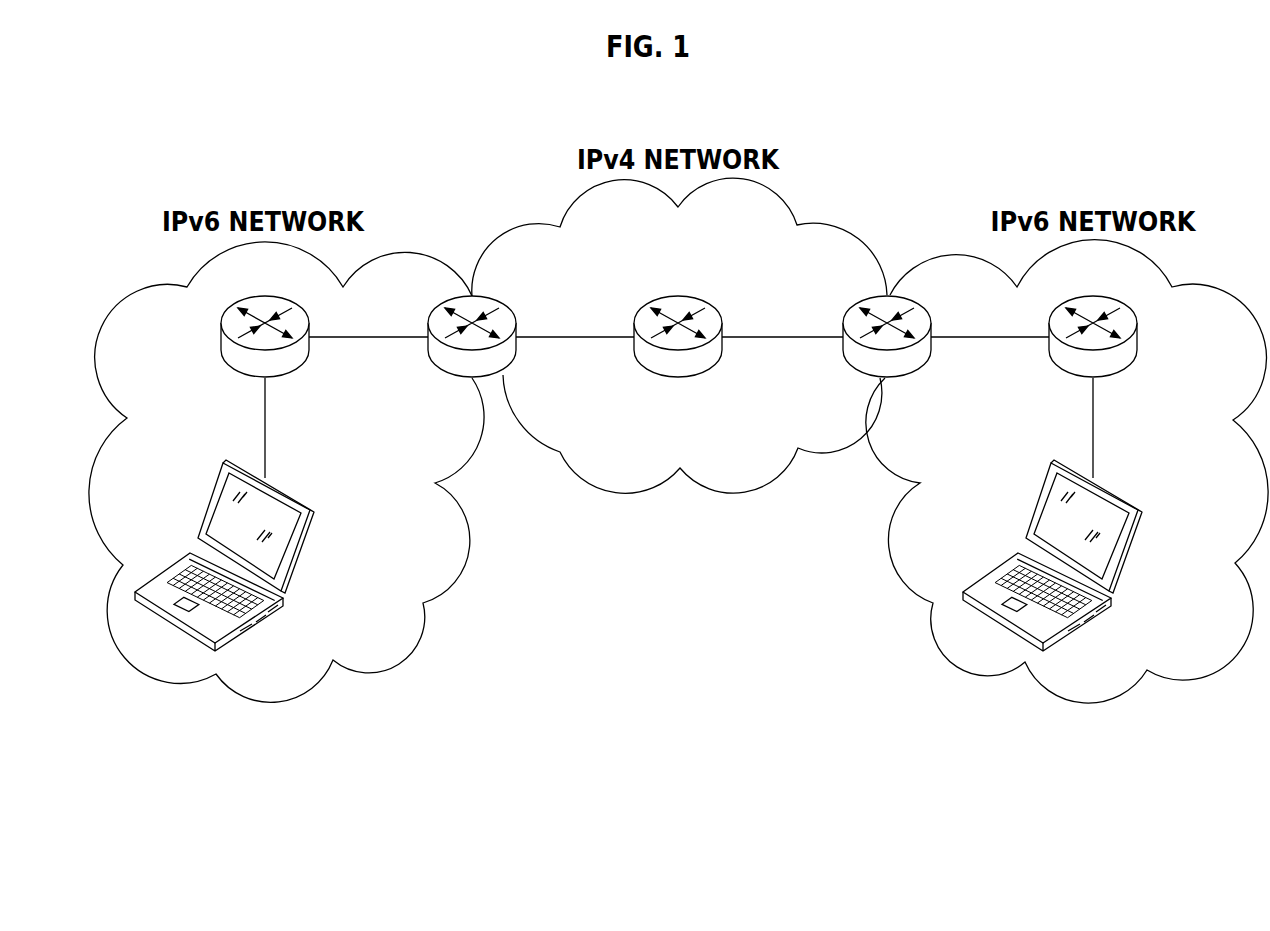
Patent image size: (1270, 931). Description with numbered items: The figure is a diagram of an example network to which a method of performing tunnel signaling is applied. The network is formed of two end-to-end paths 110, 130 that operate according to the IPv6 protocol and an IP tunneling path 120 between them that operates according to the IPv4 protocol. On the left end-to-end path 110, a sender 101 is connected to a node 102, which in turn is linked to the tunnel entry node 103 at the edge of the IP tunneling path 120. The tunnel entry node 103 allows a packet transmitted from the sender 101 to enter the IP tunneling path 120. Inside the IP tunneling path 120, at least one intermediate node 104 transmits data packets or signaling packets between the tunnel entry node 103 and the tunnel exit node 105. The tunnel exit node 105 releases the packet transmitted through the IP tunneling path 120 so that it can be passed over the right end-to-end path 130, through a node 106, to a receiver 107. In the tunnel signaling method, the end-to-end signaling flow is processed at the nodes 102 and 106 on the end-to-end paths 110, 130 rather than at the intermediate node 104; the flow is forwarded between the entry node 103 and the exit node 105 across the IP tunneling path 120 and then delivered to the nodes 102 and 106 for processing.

The sender 101 is at (298, 546).
The node on the end-to-end path 102 is at (298, 376).
The tunnel entry node 103 is at (505, 376).
The intermediate node 104 is at (680, 378).
The tunnel exit node 105 is at (920, 376).
The node on the end-to-end path 106 is at (1126, 376).
The receiver 107 is at (1128, 546).
The end-to-end path 110 is at (270, 702).
The IP tunneling path 120 is at (730, 494).
The end-to-end path 130 is at (1087, 703).